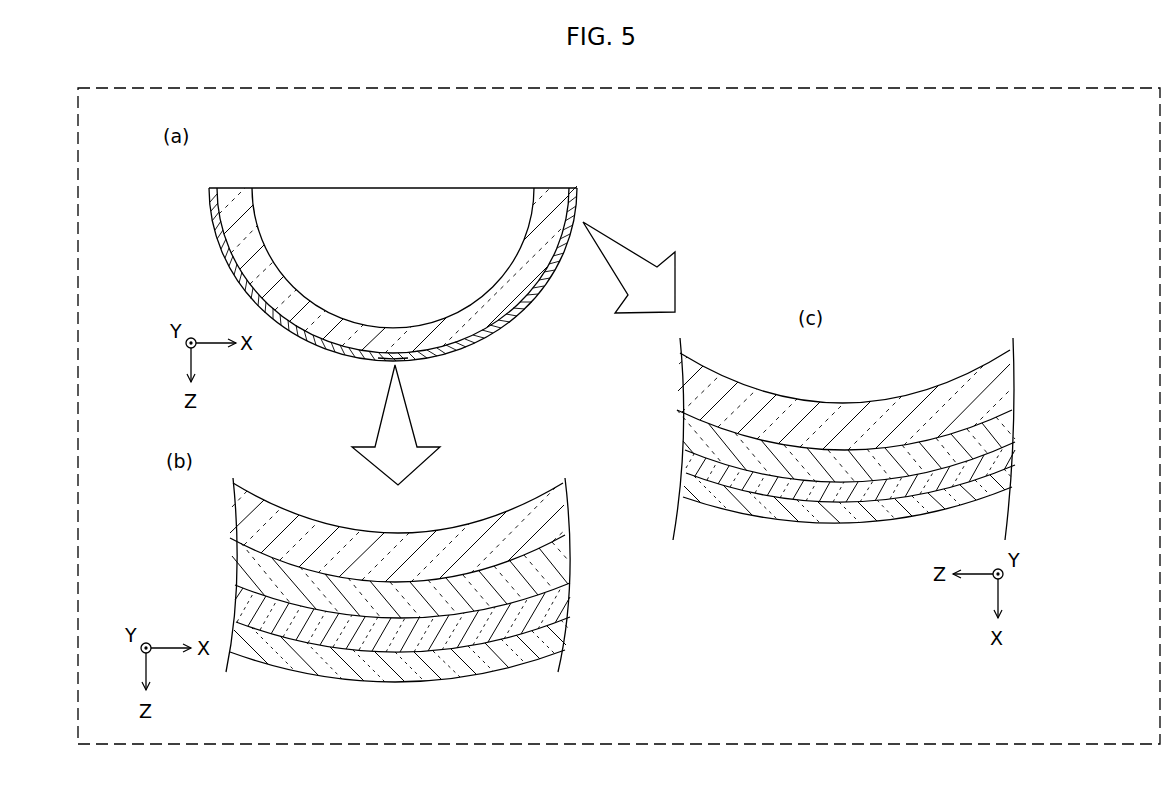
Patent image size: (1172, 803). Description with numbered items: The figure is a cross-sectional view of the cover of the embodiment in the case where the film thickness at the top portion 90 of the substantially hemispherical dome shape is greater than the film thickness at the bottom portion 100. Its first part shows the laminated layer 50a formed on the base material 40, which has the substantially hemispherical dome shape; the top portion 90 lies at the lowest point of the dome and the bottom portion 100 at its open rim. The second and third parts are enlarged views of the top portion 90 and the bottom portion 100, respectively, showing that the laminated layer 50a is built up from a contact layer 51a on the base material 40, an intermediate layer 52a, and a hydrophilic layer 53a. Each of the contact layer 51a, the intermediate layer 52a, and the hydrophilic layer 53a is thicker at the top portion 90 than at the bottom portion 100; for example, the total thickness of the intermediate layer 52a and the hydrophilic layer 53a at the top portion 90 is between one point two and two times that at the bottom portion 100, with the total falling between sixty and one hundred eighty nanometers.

The bottom portion 100 is at (203, 206).
The top portion 90 is at (388, 365).
The base material 40 is at (545, 193).
The laminated layer 50a is at (573, 190).
The contact layer 51a is at (565, 568).
The intermediate layer 52a is at (567, 598).
The hydrophilic layer 53a is at (565, 634).